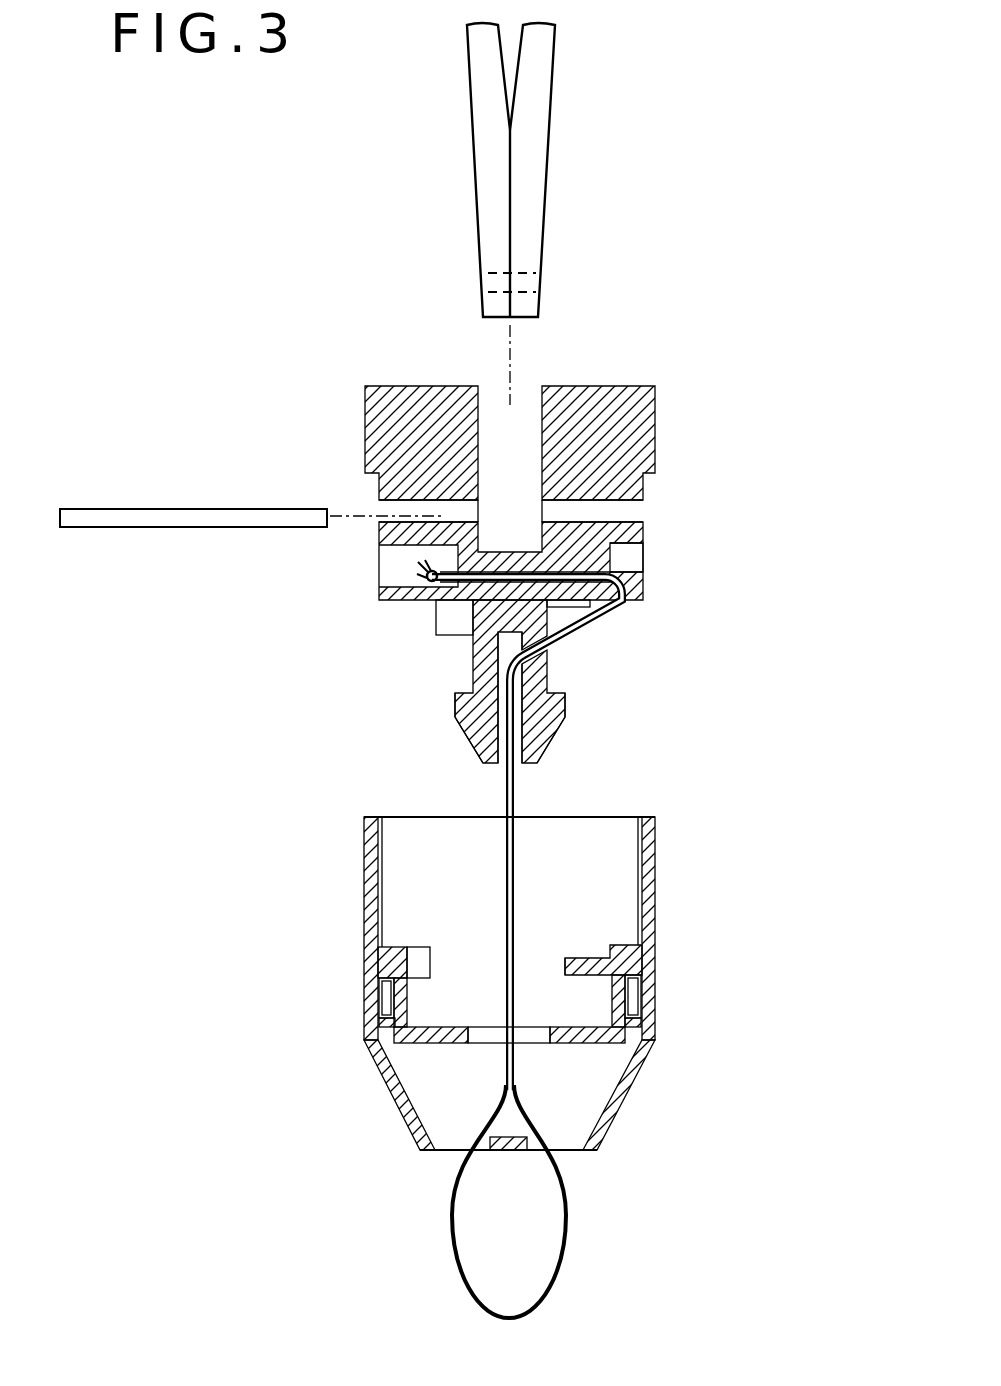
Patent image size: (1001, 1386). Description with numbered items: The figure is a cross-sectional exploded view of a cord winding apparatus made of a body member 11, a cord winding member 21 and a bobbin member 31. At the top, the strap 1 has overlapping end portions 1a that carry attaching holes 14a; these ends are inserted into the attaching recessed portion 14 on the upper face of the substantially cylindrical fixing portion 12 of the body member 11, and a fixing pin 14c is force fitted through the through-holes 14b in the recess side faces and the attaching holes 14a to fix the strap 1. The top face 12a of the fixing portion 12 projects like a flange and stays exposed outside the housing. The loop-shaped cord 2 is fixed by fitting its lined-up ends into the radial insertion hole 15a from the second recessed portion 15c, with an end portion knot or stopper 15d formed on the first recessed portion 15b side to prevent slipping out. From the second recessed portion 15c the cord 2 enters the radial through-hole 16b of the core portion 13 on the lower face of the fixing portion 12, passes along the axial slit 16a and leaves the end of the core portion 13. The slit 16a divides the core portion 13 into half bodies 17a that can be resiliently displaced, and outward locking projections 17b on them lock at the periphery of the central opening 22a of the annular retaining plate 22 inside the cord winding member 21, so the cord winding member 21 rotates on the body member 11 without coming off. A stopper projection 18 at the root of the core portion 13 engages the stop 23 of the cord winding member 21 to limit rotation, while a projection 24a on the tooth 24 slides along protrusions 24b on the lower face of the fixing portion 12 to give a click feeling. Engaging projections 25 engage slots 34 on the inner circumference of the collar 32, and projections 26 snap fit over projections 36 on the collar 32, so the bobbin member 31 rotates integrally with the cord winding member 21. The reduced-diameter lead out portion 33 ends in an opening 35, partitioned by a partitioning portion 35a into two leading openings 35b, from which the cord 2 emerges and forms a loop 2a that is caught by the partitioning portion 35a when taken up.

The strap 1 is at (523, 170).
The end portions of the strap 1a is at (487, 232).
The loop-shaped cord 2 is at (489, 939).
The loop 2a is at (560, 1272).
The body member 11 is at (509, 533).
The fixing portion 12 is at (509, 493).
The top face of the fixing portion 12a is at (380, 405).
The core portion 13 is at (514, 682).
The attaching recessed portion 14 is at (536, 400).
The attaching holes 14a is at (486, 280).
The through-holes 14b is at (380, 508).
The fixing pin 14c is at (190, 512).
The insertion hole 15a is at (630, 578).
The first recessed portion 15b is at (380, 548).
The second recessed portion 15c is at (642, 546).
The end portion knot or stopper 15d is at (386, 582).
The slit 16a is at (498, 672).
The through-hole 16b is at (540, 660).
The half bodies 17a is at (460, 698).
The locking projections 17b is at (470, 735).
The stopper projection 18 is at (438, 625).
The cord winding member 21 is at (378, 1002).
The retaining plate 22 is at (544, 1025).
The central opening 22a is at (466, 1028).
The stop 23 is at (418, 946).
The tooth 24 is at (643, 977).
The projection 24a is at (567, 952).
The protrusions 24b is at (598, 616).
The engaging projections 25 is at (380, 962).
The projections 26 is at (372, 1040).
The bobbin member 31 is at (494, 1008).
The collar 32 is at (364, 887).
The lead out portion 33 is at (396, 1107).
The slots 34 is at (378, 852).
The opening 35 is at (514, 1195).
The partitioning portion 35a is at (520, 1152).
The leading openings 35b is at (492, 1150).
The projections 36 is at (382, 1016).